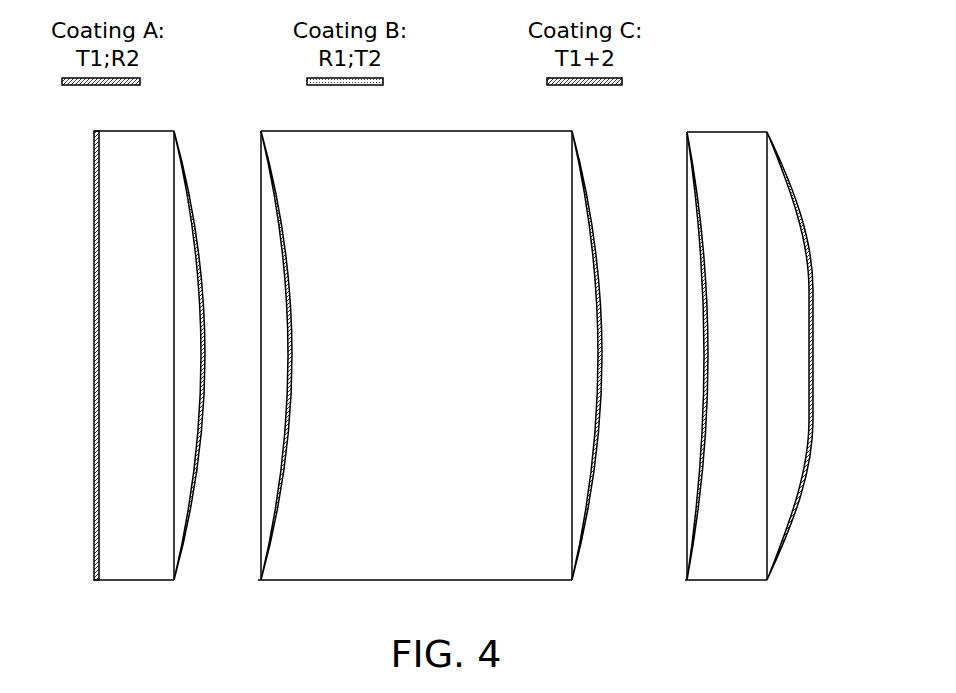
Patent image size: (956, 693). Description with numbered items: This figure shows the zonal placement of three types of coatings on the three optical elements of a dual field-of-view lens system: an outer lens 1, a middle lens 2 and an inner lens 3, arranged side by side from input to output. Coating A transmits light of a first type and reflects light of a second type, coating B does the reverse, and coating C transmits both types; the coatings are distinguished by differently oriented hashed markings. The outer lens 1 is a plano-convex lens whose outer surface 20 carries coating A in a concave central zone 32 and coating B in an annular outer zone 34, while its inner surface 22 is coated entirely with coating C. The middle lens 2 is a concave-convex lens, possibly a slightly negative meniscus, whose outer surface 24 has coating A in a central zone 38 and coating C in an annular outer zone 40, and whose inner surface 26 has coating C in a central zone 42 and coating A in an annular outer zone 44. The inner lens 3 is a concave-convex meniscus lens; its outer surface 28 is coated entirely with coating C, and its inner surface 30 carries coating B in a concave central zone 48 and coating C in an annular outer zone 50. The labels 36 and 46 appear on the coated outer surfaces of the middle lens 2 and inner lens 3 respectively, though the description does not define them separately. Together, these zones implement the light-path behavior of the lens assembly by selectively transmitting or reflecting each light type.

The outer lens 1 is at (111, 379).
The middle lens 2 is at (426, 379).
The inner lens 3 is at (751, 380).
The outer surface of outer lens 20 is at (92, 355).
The inner surface of outer lens 22 is at (203, 353).
The outer surface of middle lens 24 is at (272, 355).
The inner surface of middle lens 26 is at (593, 355).
The outer surface of inner lens 28 is at (702, 356).
The inner surface of inner lens 30 is at (803, 356).
The central zone 32 is at (96, 333).
The annular outer zone 34 is at (58, 355).
The upper coating region of second lens first surface 36 is at (238, 355).
The central zone 38 is at (292, 345).
The annular outer zone 40 is at (238, 355).
The central zone 42 is at (604, 366).
The annular outer zone 44 is at (620, 355).
The coating region of third lens first surface 46 is at (698, 475).
The central zone 48 is at (813, 367).
The annular outer zone 50 is at (823, 356).